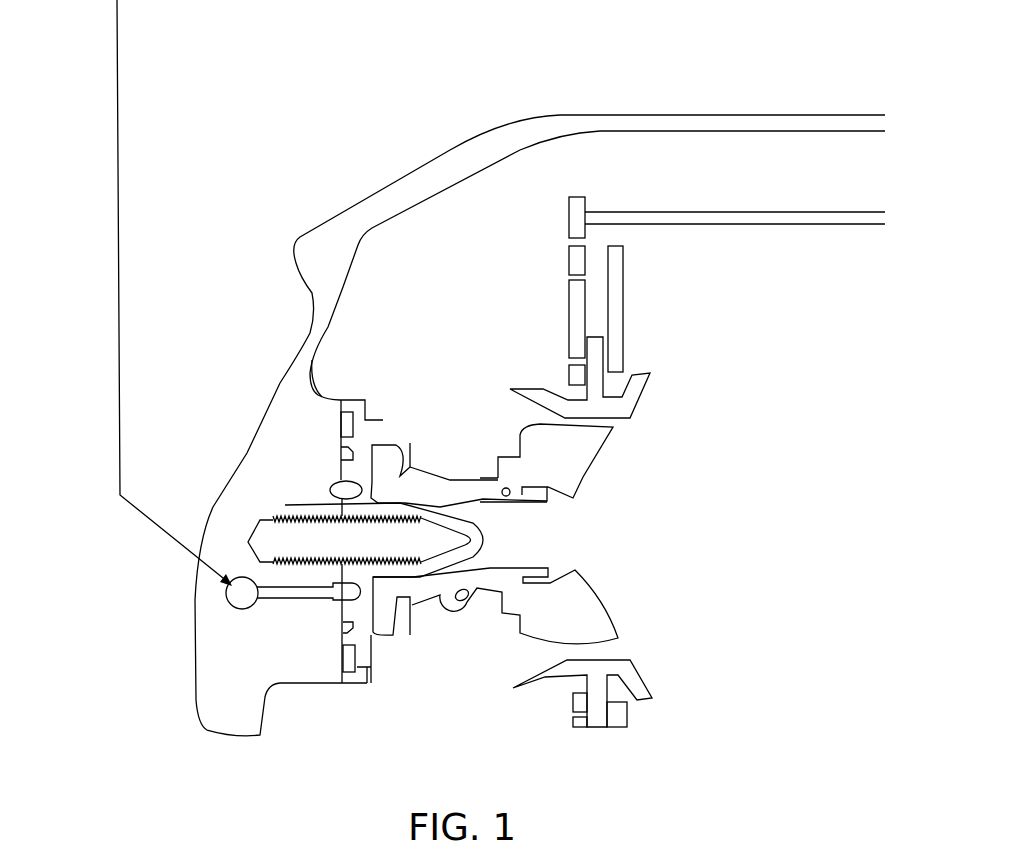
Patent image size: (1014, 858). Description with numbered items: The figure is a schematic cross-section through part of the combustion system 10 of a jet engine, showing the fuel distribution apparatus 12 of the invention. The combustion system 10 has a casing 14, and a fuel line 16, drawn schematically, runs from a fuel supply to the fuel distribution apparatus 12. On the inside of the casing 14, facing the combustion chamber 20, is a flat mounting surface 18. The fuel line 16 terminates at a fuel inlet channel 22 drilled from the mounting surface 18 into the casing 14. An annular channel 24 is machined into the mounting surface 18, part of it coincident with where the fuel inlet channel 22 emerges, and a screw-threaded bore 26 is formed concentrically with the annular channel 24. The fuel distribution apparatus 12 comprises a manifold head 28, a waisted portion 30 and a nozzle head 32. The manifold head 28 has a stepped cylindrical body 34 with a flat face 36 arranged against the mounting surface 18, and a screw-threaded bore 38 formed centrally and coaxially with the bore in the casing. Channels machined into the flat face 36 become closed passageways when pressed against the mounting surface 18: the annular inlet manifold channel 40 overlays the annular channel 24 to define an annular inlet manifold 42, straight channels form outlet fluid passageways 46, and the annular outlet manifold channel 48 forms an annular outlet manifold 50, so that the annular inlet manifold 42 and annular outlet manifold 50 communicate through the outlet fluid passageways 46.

The combustion system 10 is at (238, 313).
The fuel distribution apparatus 12 is at (455, 672).
The casing 14 is at (360, 207).
The fuel line 16 is at (115, 43).
The mounting surface 18 is at (338, 680).
The combustion chamber 20 is at (810, 318).
The fuel inlet channel 22 is at (288, 600).
The annular channel 24 is at (332, 488).
The screw-threaded bore 26 is at (272, 519).
The manifold head 28 is at (383, 420).
The waisted portion 30 is at (463, 480).
The nozzle head 32 is at (615, 428).
The stepped cylindrical body 34 is at (372, 661).
The flat face 36 is at (335, 402).
The screw-threaded bore 38 is at (285, 505).
The annular inlet manifold channel 40 is at (372, 482).
The annular inlet manifold 42 is at (376, 478).
The outlet fluid passageways 46 is at (353, 625).
The annular outlet manifold channel 48 is at (373, 683).
The annular outlet manifold 50 is at (347, 683).